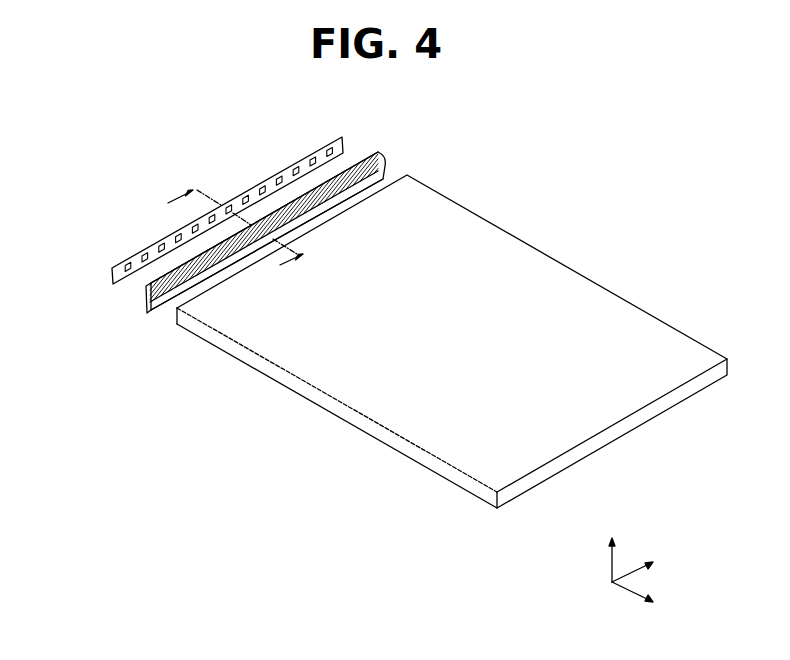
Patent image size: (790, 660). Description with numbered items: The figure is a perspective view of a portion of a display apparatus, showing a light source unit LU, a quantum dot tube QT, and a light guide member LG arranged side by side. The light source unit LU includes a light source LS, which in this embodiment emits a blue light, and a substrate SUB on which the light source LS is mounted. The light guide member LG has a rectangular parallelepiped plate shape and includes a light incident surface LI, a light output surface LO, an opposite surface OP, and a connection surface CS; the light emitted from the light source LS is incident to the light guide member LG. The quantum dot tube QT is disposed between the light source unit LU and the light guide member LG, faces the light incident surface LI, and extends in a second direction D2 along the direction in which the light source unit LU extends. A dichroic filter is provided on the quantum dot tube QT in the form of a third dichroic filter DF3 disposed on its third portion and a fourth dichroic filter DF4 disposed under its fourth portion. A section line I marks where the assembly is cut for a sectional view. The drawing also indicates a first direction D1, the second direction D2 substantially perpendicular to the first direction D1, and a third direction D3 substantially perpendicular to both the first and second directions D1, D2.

The light source unit LU is at (53, 245).
The light source LS is at (128, 258).
The substrate SUB is at (112, 285).
The quantum dot tube QT is at (145, 298).
The third dichroic filter DF3 is at (148, 282).
The fourth dichroic filter DF4 is at (152, 312).
The light guide member LG is at (250, 434).
The light incident surface LI is at (177, 314).
The connection surface CS is at (223, 348).
The light output surface LO is at (265, 352).
The opposite surface OP is at (302, 396).
The section line I-I' I is at (231, 233).
The first direction D1 is at (613, 549).
The second direction D2 is at (643, 569).
The third direction D3 is at (643, 597).